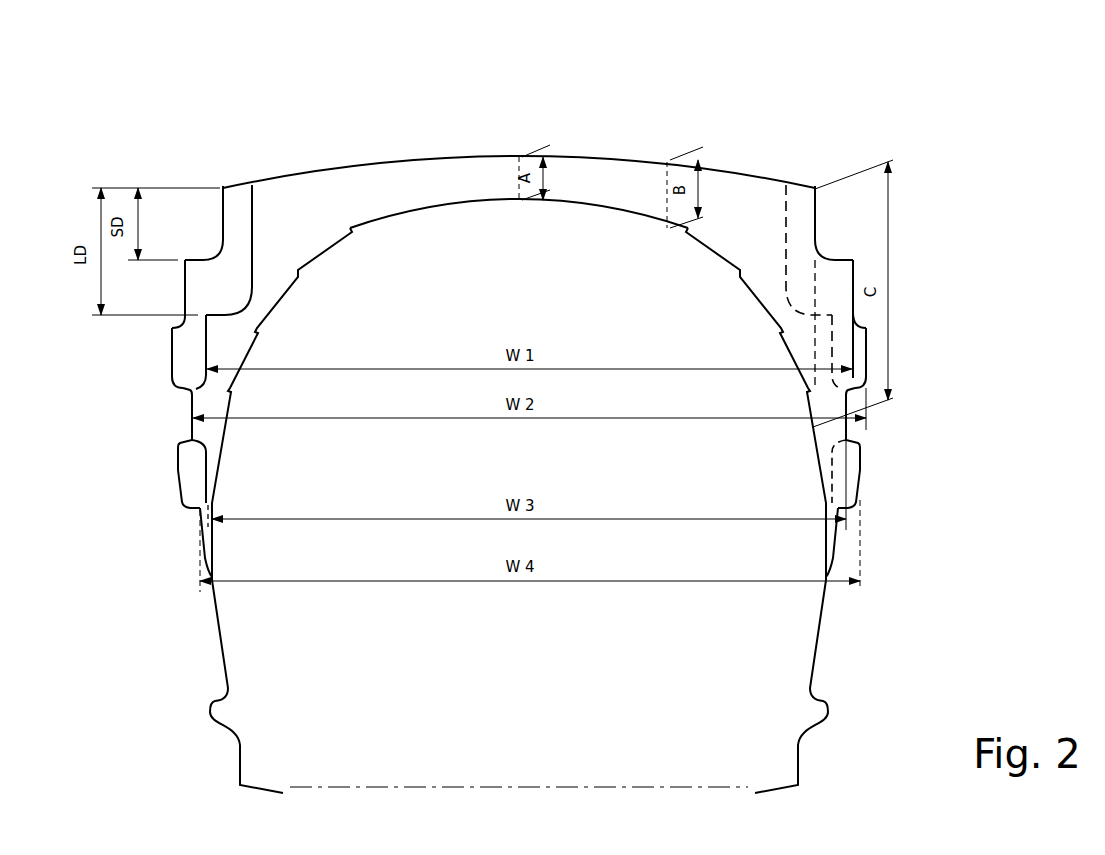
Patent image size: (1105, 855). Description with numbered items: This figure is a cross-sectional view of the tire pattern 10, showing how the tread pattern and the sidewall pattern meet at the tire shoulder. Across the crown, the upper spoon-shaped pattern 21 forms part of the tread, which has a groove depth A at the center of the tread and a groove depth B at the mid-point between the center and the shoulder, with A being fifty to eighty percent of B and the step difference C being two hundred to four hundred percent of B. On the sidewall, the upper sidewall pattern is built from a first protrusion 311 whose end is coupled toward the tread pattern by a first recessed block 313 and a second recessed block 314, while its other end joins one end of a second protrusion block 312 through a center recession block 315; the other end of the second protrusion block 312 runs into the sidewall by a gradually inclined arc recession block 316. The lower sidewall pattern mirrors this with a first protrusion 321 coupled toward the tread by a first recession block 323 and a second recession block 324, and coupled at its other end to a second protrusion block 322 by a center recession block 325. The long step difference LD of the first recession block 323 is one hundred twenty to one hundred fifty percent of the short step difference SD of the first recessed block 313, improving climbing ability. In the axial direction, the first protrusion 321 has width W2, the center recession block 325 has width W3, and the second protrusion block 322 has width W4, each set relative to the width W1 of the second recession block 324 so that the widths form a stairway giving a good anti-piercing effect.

The tire pattern 10 is at (597, 106).
The upper spoon-shaped pattern 21 is at (742, 170).
The first protrusion 311 is at (175, 348).
The second protrusion block 312 is at (178, 470).
The first recessed block 313 is at (223, 240).
The second recessed block 314 is at (186, 294).
The center recession block 315 is at (188, 387).
The gradually inclined arc recession block 316 is at (838, 538).
The first protrusion 321 is at (193, 418).
The second protrusion block 322 is at (207, 557).
The first recession block 323 is at (250, 232).
The second recession block 324 is at (207, 348).
The center recession block 325 is at (207, 473).